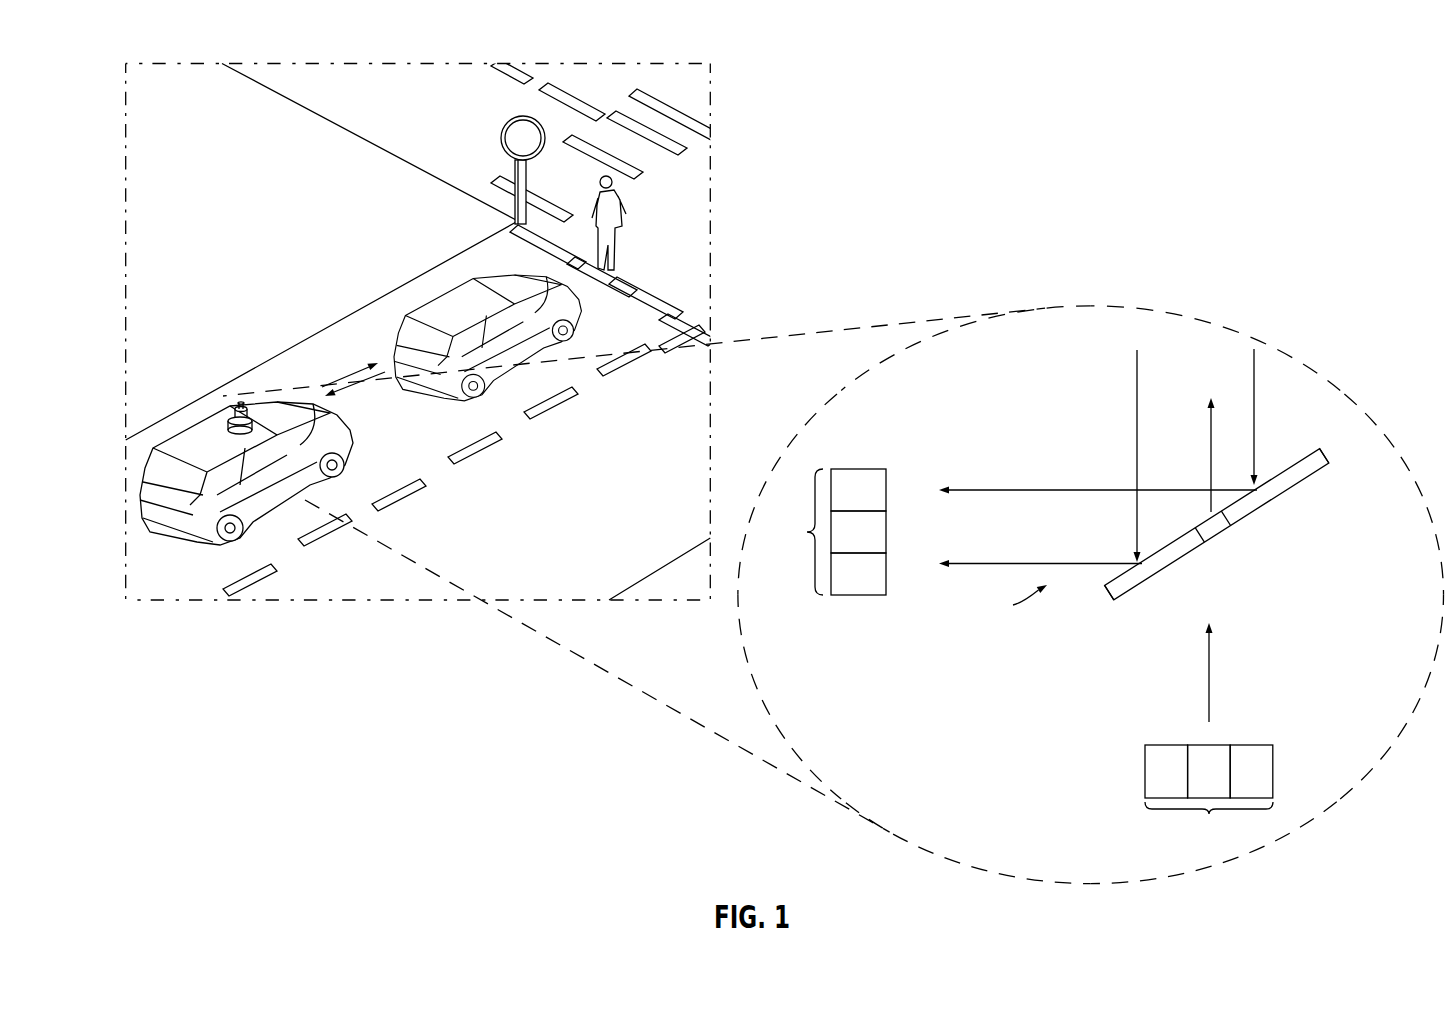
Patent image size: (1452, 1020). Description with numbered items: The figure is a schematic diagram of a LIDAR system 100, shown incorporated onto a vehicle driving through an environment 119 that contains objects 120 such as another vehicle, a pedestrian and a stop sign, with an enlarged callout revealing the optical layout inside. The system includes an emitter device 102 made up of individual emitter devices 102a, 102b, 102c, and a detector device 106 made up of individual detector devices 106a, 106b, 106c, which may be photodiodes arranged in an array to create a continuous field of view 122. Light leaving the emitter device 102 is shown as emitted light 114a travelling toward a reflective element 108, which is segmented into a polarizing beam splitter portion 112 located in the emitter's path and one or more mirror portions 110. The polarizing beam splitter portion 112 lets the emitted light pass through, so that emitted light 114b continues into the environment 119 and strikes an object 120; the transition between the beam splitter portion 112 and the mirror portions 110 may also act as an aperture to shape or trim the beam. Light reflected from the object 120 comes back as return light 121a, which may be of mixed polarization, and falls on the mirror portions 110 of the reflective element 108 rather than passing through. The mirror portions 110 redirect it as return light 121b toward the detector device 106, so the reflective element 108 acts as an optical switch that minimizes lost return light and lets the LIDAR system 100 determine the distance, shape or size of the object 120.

The LIDAR system 100 is at (212, 398).
The emitter device 102 is at (713, 663).
The emitter device 102a is at (1145, 771).
The emitter device 102b is at (1190, 745).
The emitter device 102c is at (1273, 760).
The detector device 106 is at (870, 533).
The detector device 106a is at (886, 490).
The detector device 106b is at (886, 527).
The detector device 106c is at (886, 575).
The reflective element 108 is at (1275, 552).
The mirror portion 110 is at (1298, 487).
The polarizing beam splitter portion 112 is at (1217, 526).
The emitted light 114a is at (1228, 670).
The emitted light 114b is at (1196, 402).
The environment 119 is at (677, 106).
The object 120 is at (521, 117).
The return light 121a is at (1137, 375).
The return light 121b is at (1027, 490).
The field of view 122 is at (1007, 603).